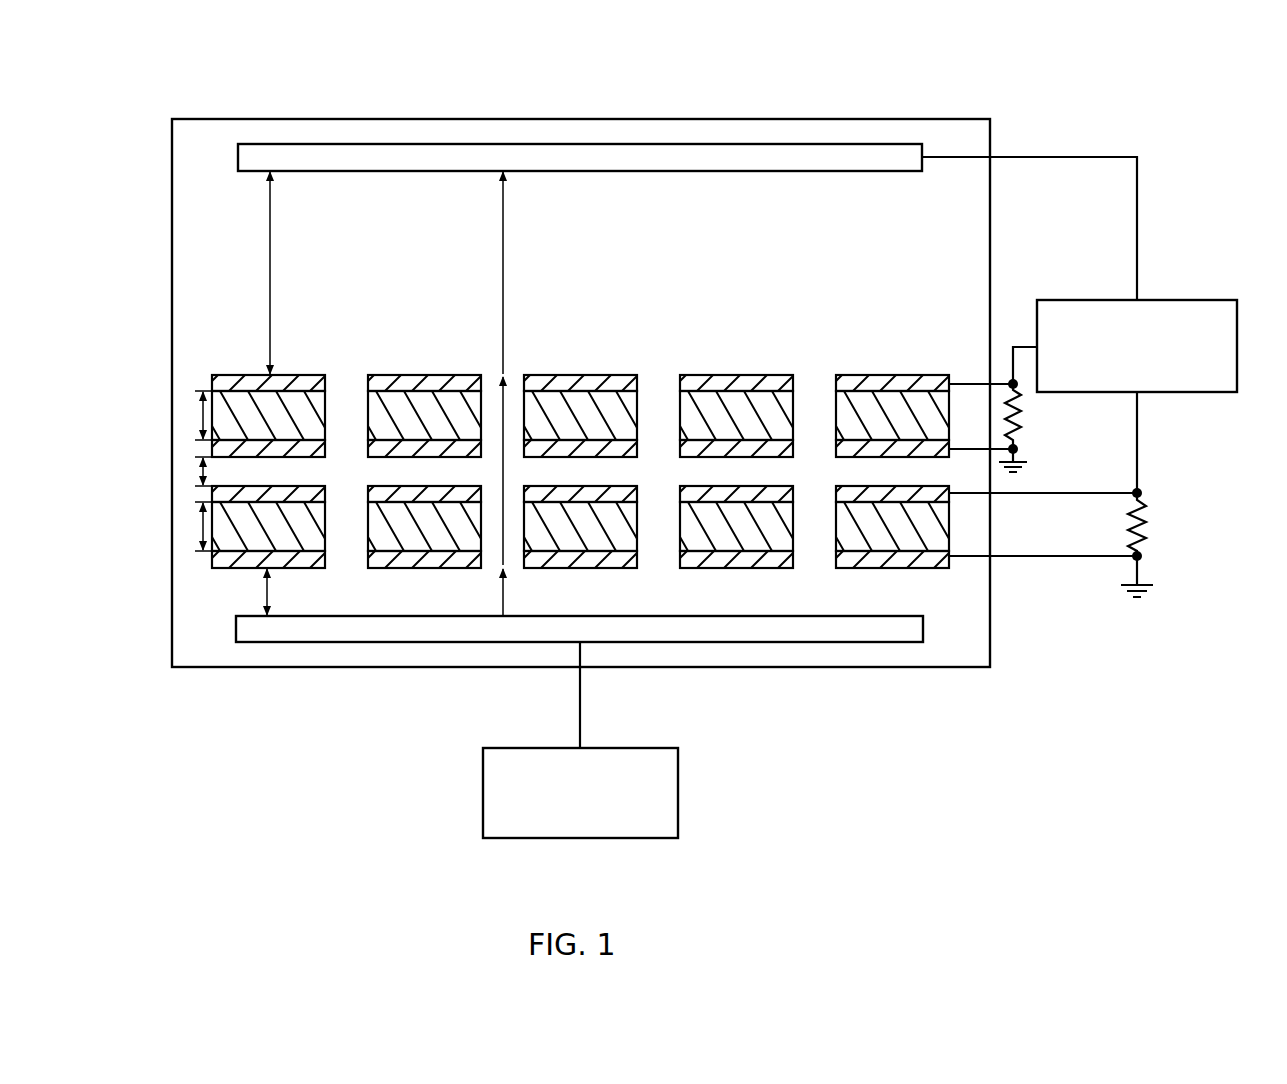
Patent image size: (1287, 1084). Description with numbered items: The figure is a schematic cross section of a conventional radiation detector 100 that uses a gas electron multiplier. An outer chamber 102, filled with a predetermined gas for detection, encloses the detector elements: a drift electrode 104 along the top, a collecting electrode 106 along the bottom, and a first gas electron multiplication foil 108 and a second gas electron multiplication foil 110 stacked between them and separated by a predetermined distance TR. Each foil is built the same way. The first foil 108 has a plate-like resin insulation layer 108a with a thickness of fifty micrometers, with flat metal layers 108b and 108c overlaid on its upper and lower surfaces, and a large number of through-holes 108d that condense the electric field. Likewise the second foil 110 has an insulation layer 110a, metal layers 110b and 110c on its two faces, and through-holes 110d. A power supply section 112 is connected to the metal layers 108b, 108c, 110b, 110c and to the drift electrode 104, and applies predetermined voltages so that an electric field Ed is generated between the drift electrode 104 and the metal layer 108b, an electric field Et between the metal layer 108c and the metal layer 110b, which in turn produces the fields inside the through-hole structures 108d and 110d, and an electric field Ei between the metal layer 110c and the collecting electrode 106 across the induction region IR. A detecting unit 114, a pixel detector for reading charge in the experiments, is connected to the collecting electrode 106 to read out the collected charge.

The radiation detector 100 is at (726, 74).
The outer chamber 102 is at (990, 140).
The drift electrode 104 is at (882, 158).
The collecting electrode 106 is at (872, 632).
The first gas electron multiplication foil 108 is at (639, 367).
The insulation layer 108a is at (842, 420).
The metal layer 108b is at (898, 385).
The metal layer 108c is at (889, 447).
The through-holes 108d is at (657, 393).
The second gas electron multiplication foil 110 is at (639, 554).
The insulation layer 110a is at (840, 530).
The metal layer 110b is at (878, 495).
The metal layer 110c is at (912, 560).
The through-holes 110d is at (657, 553).
The power supply section 112 is at (1205, 392).
The detecting unit 114 is at (670, 797).